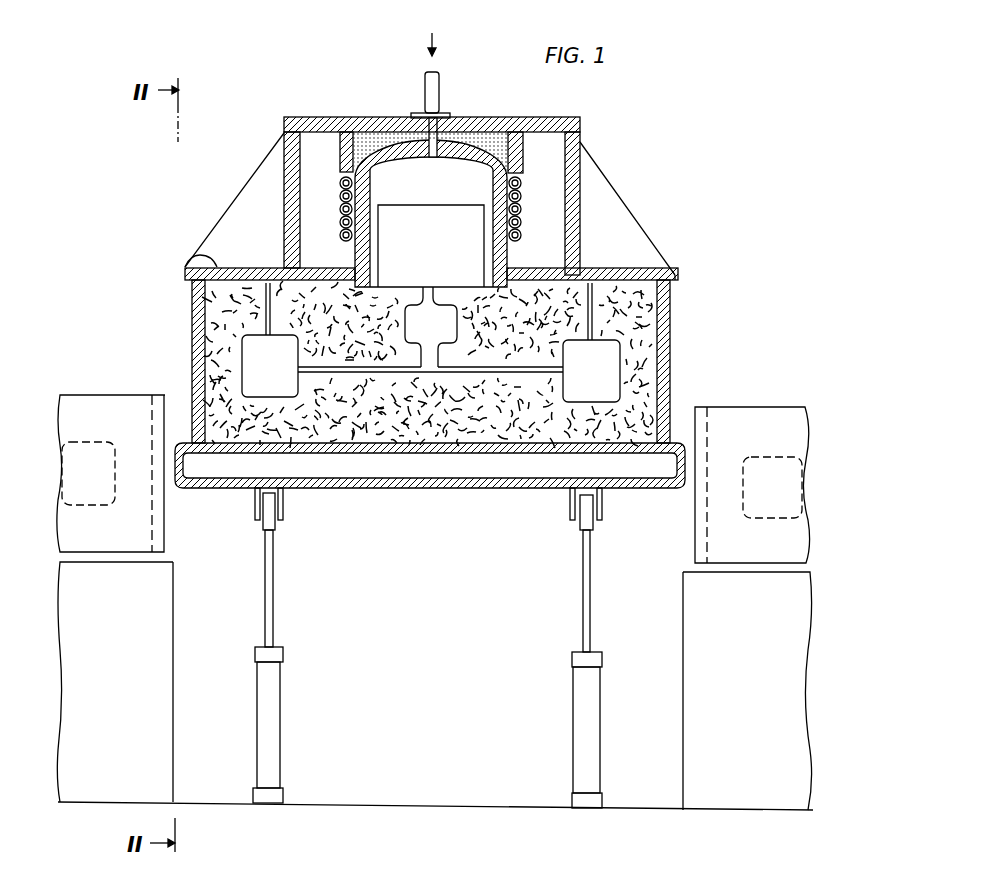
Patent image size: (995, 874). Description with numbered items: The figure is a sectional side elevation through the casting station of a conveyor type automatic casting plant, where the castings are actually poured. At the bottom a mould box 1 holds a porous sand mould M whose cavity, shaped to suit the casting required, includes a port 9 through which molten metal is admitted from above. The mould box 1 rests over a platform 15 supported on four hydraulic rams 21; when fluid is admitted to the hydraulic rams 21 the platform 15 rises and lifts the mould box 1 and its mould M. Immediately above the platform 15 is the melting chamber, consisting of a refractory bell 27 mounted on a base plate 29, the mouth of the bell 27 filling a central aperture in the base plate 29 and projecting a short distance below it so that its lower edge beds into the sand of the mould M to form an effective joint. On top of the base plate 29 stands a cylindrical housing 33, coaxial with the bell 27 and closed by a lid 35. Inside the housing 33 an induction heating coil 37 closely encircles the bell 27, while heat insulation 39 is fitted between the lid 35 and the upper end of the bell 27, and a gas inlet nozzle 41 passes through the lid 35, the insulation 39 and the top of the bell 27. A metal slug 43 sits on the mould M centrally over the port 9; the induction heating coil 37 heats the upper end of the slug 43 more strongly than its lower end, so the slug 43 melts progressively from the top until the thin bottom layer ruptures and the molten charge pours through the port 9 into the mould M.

The gas inlet nozzle 41 is at (442, 86).
The lid 35 is at (362, 126).
The heat insulation 39 is at (476, 134).
The cylindrical housing 33 is at (284, 233).
The refractory bell 27 is at (353, 247).
The induction heating coil 37 is at (518, 225).
The metal slug 43 is at (428, 244).
The port 9 is at (430, 300).
The base plate 29 is at (205, 266).
The porous sand mould M is at (646, 328).
The mould box 1 is at (665, 380).
The platform 15 is at (536, 490).
The hydraulic rams 21 is at (277, 596).